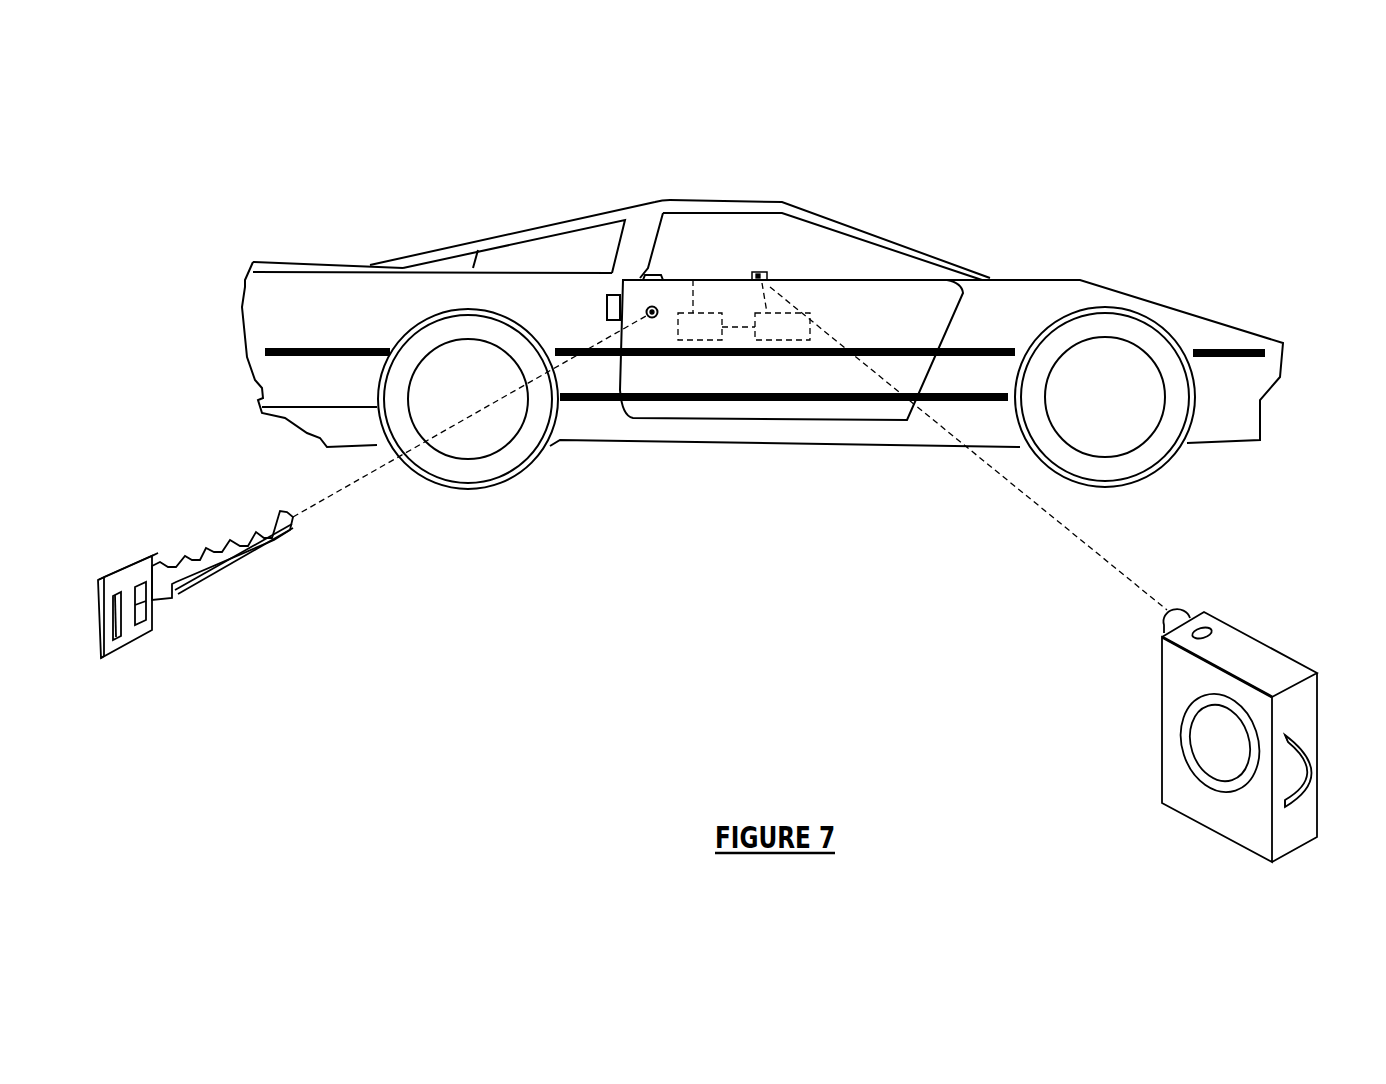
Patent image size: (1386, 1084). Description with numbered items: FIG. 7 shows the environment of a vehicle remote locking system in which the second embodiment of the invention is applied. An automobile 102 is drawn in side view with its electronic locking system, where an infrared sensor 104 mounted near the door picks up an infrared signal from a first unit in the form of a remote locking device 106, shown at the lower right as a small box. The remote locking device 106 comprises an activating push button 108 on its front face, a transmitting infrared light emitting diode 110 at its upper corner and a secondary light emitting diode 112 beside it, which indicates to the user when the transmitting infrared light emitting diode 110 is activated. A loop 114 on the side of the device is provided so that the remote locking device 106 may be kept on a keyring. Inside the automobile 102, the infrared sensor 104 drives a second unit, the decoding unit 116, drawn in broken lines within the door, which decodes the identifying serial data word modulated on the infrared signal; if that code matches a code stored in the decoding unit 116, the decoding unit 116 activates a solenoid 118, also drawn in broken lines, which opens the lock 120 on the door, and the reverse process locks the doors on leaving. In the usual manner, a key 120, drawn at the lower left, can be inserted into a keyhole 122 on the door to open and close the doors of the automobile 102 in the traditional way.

The automobile 102 is at (1027, 297).
The infrared sensor 104 is at (767, 277).
The remote locking device 106 is at (1253, 653).
The activating push button 108 is at (1213, 743).
The transmitting infrared light emitting diode 110 is at (1173, 617).
The secondary light emitting diode 112 is at (1193, 634).
The loop 114 is at (1312, 745).
The decoding unit 116 is at (777, 330).
The solenoid 118 is at (702, 330).
The key 120 is at (187, 583).
The keyhole 122 is at (650, 322).